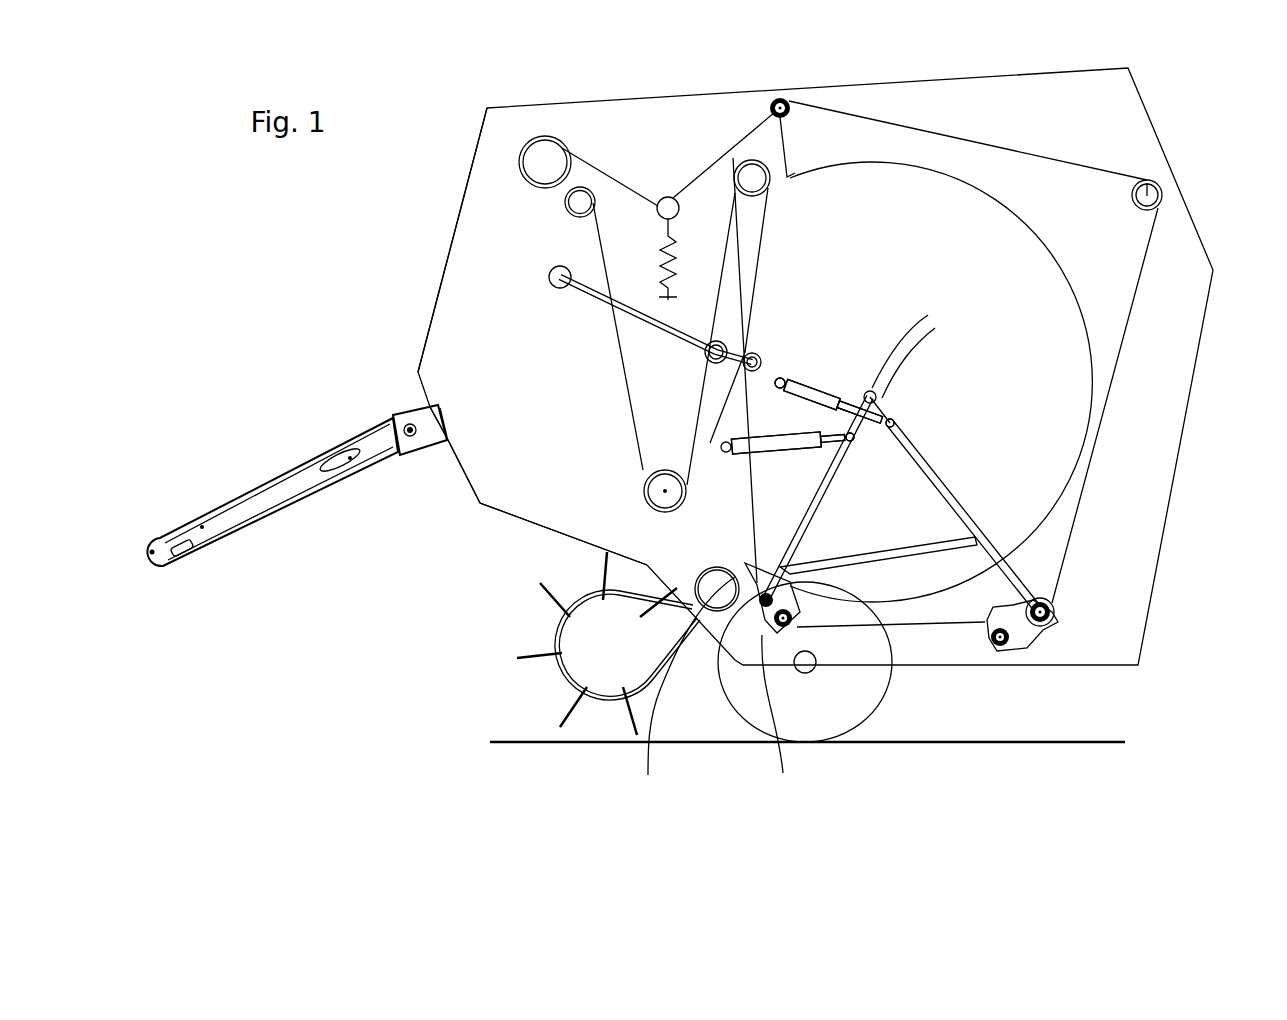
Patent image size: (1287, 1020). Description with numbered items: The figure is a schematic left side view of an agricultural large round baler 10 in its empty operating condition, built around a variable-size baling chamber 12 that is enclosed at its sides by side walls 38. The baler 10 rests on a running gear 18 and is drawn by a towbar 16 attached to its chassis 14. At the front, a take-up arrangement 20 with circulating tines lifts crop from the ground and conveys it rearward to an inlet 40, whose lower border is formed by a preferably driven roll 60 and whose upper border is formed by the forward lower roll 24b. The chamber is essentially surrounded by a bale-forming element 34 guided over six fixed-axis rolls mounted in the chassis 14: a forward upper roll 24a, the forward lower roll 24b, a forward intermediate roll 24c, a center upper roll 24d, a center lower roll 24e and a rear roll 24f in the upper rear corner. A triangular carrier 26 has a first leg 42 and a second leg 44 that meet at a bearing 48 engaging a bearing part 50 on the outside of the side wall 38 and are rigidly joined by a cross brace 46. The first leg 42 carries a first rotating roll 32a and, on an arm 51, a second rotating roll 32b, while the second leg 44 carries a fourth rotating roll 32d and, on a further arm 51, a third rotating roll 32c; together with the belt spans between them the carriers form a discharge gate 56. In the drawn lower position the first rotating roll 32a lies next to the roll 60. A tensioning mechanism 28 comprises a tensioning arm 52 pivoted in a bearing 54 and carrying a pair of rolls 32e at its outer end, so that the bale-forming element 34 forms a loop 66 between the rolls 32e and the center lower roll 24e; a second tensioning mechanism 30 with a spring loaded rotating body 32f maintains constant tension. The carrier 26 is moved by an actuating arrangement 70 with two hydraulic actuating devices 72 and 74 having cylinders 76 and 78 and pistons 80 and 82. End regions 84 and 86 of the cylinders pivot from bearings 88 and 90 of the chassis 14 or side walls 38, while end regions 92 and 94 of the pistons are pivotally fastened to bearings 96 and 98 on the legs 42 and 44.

The large round baler 10 is at (222, 246).
The baling chamber 12 is at (733, 410).
The chassis 14 is at (482, 503).
The towbar 16 is at (215, 512).
The running gear 18 is at (833, 673).
The take-up arrangement 20 is at (563, 672).
The forward upper roll 24a is at (520, 158).
The forward lower roll 24b is at (660, 470).
The forward intermediate roll 24c is at (566, 206).
The center upper roll 24d is at (781, 100).
The center lower roll 24e is at (731, 163).
The rear roll 24f is at (1158, 190).
The carrier 26 is at (930, 455).
The tensioning mechanism 28 is at (578, 355).
The second tensioning mechanism 30 is at (652, 180).
The first rotating roll 32a is at (762, 628).
The second rotating roll 32b is at (791, 726).
The third rotating roll 32c is at (990, 655).
The fourth rotating roll 32d is at (1060, 630).
The rolls on movable axes 32e is at (752, 352).
The spring loaded rotating body 32f is at (677, 202).
The bale-forming element 34 is at (1006, 160).
The side wall 38 is at (1003, 328).
The inlet 40 is at (668, 541).
The first leg 42 is at (818, 520).
The second leg 44 is at (975, 537).
The cross brace 46 is at (877, 553).
The bearing 48 is at (880, 395).
The bearing part 50 is at (875, 390).
The arm 51 is at (763, 633).
The tensioning arm 52 is at (592, 290).
The bearing 54 is at (550, 278).
The discharge gate 56 is at (963, 675).
The roll 60 is at (686, 693).
The loop 66 is at (762, 205).
The actuating arrangement 70 is at (858, 362).
The actuating device 72 is at (790, 460).
The actuating device 74 is at (821, 382).
The cylinder 76 is at (760, 452).
The cylinder 78 is at (802, 380).
The piston 80 is at (847, 440).
The piston 82 is at (868, 420).
The end region 84 is at (727, 434).
The end region 86 is at (778, 378).
The bearing 88 is at (725, 455).
The bearing 90 is at (781, 376).
The end region 92 is at (875, 390).
The end region 94 is at (917, 430).
The bearing 96 is at (890, 475).
The bearing 98 is at (893, 425).